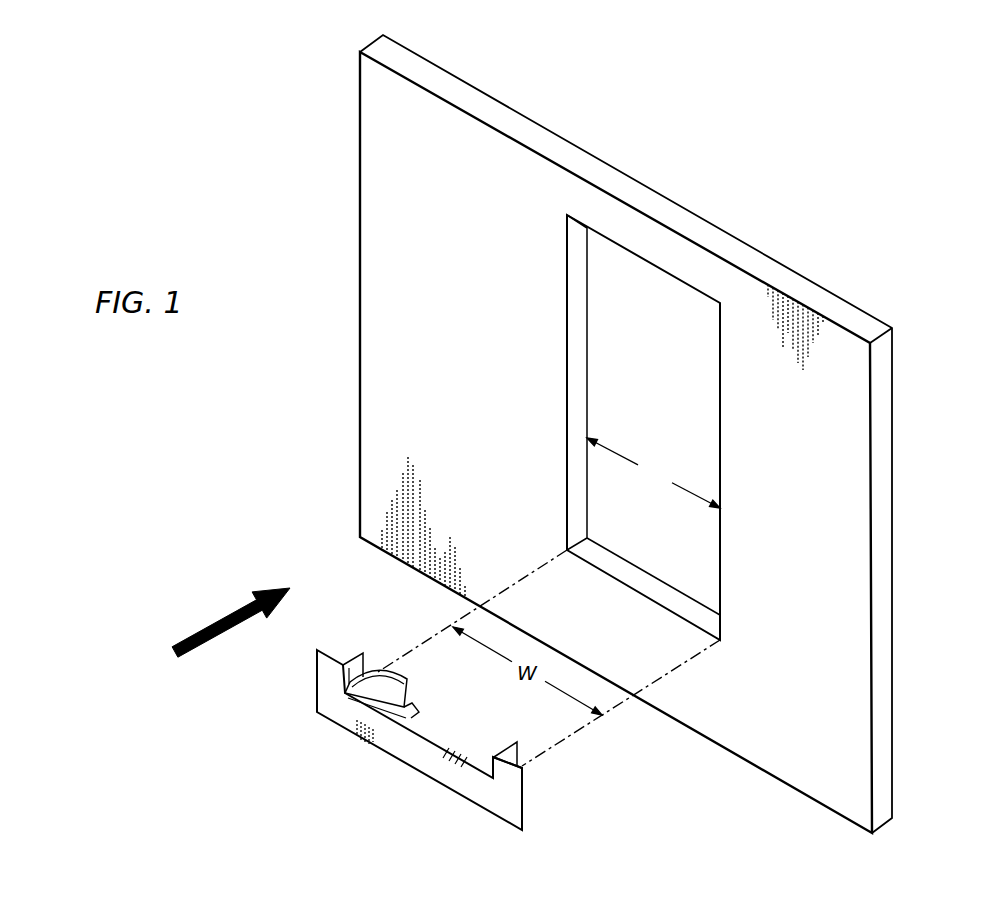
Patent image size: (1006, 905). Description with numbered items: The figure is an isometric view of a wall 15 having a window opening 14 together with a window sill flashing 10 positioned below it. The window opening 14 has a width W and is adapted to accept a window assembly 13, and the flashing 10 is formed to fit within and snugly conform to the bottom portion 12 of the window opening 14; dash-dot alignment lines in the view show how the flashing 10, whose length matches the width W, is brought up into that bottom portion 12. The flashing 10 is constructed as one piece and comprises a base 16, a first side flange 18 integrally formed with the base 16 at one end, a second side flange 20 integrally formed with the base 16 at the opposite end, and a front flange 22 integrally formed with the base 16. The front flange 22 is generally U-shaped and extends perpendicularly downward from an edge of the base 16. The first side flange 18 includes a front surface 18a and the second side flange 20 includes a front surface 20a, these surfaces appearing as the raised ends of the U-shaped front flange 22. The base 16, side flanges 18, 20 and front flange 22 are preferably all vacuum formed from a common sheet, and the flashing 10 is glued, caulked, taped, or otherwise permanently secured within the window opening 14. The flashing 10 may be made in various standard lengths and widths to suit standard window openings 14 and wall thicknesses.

The window sill flashing 10 is at (419, 723).
The bottom portion 12 is at (654, 587).
The window assembly 13 is at (409, 667).
The window opening 14 is at (697, 425).
The wall 15 is at (449, 304).
The base 16 is at (420, 718).
The first side flange 18 is at (352, 668).
The front surface 18a is at (328, 680).
The second side flange 20 is at (510, 742).
The front surface 20a is at (513, 782).
The front flange 22 is at (420, 757).